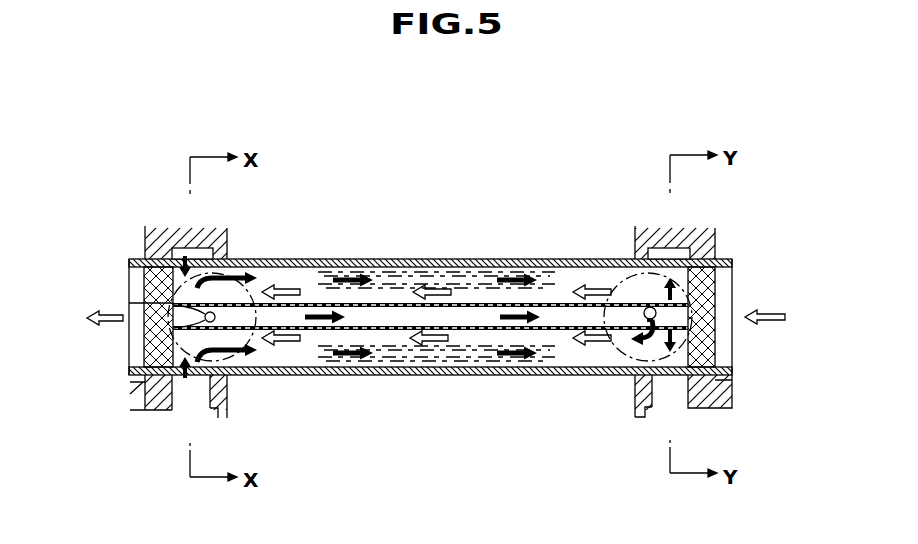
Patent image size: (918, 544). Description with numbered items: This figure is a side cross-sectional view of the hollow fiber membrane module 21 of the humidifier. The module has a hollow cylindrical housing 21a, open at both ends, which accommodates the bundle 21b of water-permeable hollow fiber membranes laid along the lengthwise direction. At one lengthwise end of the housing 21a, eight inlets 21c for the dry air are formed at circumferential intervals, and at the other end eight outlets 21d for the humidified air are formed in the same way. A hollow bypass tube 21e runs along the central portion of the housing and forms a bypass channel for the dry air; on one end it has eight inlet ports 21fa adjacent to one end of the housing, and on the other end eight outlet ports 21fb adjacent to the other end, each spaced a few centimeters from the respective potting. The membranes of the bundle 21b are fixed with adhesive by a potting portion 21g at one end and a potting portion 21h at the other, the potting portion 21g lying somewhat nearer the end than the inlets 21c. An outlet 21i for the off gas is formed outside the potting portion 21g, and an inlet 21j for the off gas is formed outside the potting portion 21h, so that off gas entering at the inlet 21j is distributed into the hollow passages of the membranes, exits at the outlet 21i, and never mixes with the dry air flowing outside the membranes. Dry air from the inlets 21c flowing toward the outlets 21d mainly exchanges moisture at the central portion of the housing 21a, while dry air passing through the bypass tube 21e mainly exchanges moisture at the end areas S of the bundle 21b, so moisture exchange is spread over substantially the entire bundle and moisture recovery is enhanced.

The hollow fiber membrane module 21 is at (521, 228).
The housing 21a is at (408, 257).
The bundle of hollow fiber membranes 21b is at (447, 364).
The inlets for the dry air 21c is at (183, 254).
The outlets for the humidified air 21d is at (690, 250).
The bypass tube 21e is at (342, 330).
The inlet ports for the introduction of the dry air 21fa is at (130, 303).
The outlet ports for the dry air 21fb is at (646, 300).
The potting portion at one end 21g is at (153, 409).
The potting portion at another end 21h is at (695, 376).
The outlet for the off gas flow 21i is at (136, 286).
The inlet for the off gas 21j is at (733, 314).
The areas of moisture exchange S is at (243, 285).